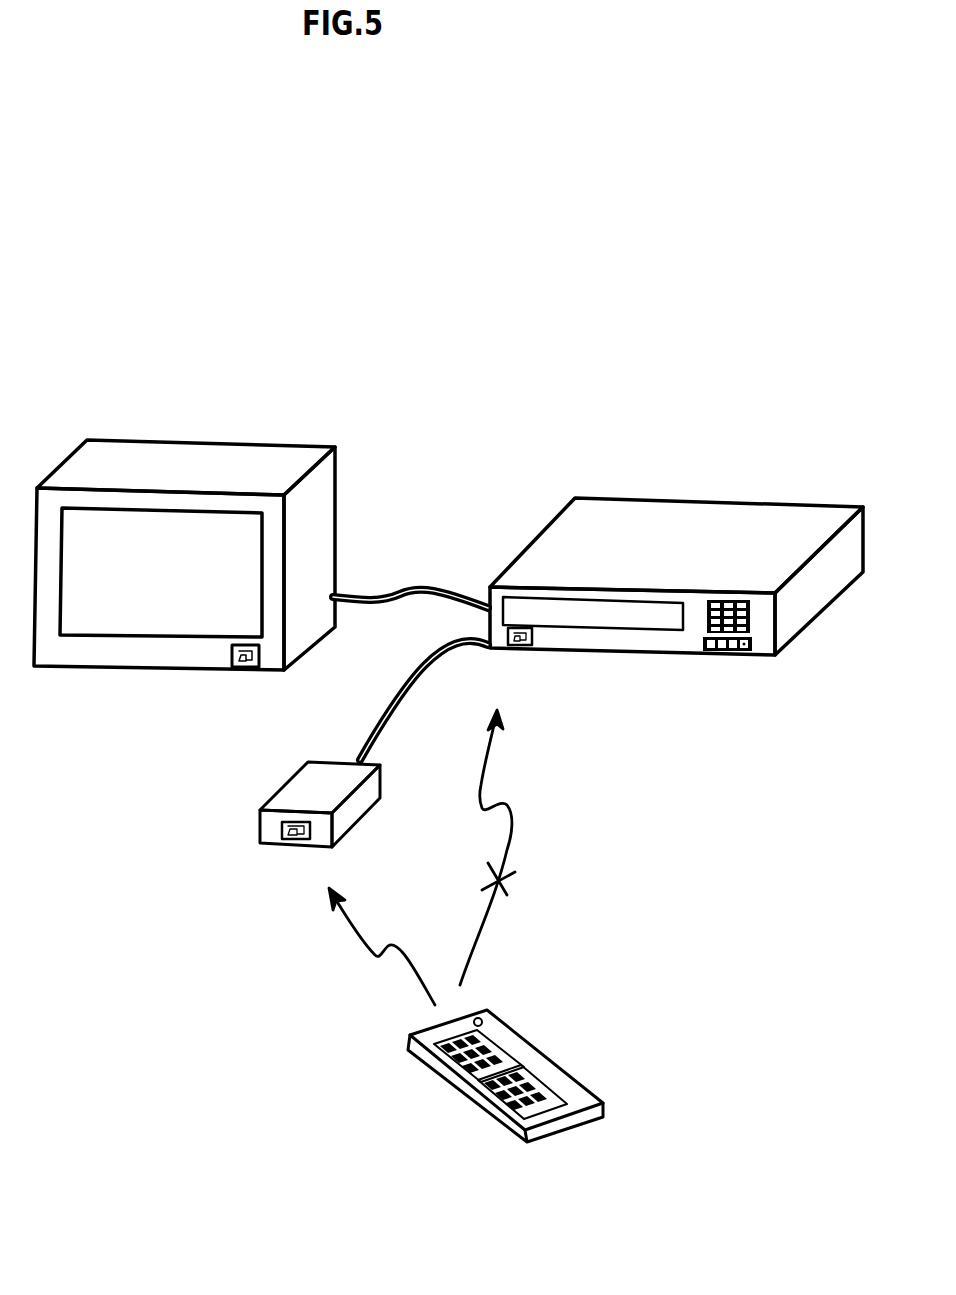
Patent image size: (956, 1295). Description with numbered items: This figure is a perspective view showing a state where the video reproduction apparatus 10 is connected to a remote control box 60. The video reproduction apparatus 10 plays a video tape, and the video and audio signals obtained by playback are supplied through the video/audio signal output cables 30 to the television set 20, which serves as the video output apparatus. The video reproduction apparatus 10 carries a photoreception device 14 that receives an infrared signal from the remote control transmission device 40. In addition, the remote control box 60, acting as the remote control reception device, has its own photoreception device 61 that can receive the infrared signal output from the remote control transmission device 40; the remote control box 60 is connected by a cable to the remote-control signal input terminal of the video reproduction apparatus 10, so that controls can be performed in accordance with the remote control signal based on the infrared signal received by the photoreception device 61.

The video reproduction apparatus 10 is at (730, 498).
The photoreception device 14 is at (533, 647).
The television set 20 is at (226, 440).
The video/audio signal output cables 30 is at (408, 590).
The remote control transmission device 40 is at (530, 1042).
The remote control box 60 is at (282, 788).
The photoreception device 61 is at (277, 847).